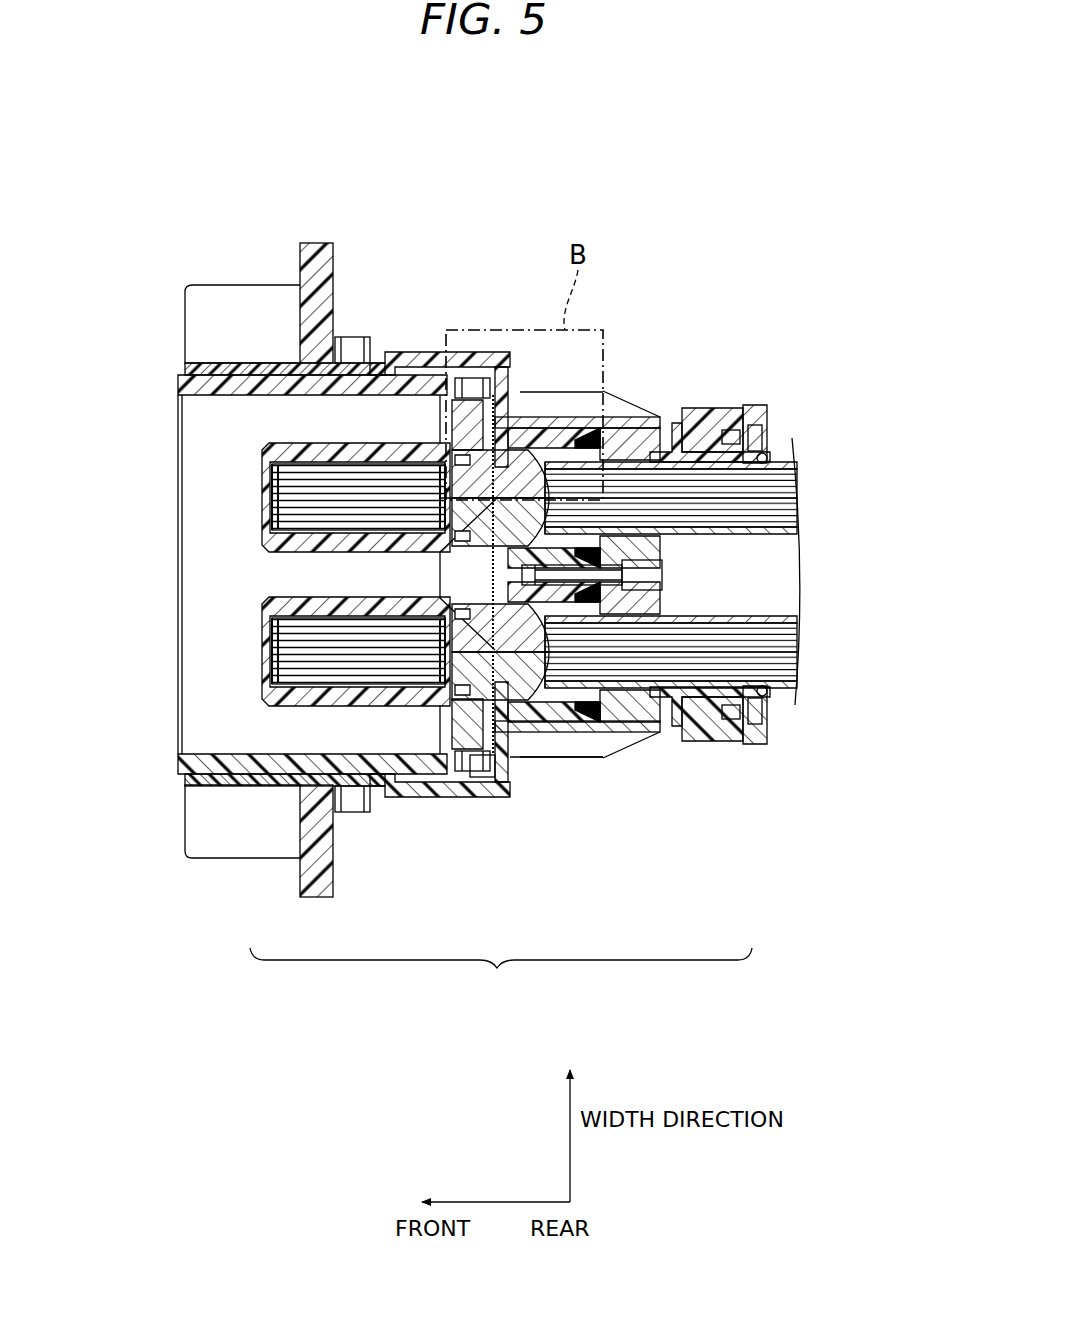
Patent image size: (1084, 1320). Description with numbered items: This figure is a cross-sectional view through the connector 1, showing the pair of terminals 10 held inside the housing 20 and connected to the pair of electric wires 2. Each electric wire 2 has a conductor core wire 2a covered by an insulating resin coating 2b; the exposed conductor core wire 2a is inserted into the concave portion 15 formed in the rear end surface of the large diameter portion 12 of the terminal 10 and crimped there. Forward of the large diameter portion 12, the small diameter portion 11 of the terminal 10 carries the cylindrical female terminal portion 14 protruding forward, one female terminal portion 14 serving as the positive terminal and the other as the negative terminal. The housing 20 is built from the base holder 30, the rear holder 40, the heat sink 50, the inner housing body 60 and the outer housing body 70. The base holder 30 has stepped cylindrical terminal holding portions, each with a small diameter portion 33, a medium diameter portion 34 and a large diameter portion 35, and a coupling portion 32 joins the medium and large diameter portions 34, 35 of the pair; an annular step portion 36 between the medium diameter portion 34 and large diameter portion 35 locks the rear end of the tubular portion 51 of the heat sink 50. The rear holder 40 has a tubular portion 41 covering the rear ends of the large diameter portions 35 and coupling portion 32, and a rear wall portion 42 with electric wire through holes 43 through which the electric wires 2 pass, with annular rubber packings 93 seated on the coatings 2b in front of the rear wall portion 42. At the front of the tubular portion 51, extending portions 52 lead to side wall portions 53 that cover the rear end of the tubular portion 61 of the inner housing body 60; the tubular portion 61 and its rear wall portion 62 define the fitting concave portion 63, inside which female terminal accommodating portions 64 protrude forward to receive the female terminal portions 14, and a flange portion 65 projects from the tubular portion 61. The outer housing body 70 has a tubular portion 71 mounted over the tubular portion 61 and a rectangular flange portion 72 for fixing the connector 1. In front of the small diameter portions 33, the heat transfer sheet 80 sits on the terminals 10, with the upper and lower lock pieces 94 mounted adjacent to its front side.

The connector 1 is at (762, 245).
The electric wire 2 is at (722, 571).
The conductor core wire 2a is at (765, 525).
The coating 2b is at (785, 458).
The terminal 10 is at (548, 705).
The small diameter portion 11 is at (458, 430).
The large diameter portion 12 is at (613, 470).
The female terminal portion 14 is at (345, 483).
The concave portion 15 is at (635, 460).
The housing 20 is at (501, 975).
The base holder 30 is at (680, 738).
The coupling portion 32 is at (660, 567).
The small diameter portion 33 is at (538, 445).
The medium diameter portion 34 is at (585, 450).
The large diameter portion 35 is at (685, 440).
The step portion 36 is at (658, 460).
The rear holder 40 is at (738, 748).
The tubular portion 41 is at (748, 420).
The rear wall portion 42 is at (760, 440).
The electric wire through hole 43 is at (775, 460).
The heat sink 50 is at (597, 740).
The tubular portion 51 is at (520, 370).
The extending portion 52 is at (505, 352).
The side wall portion 53 is at (468, 352).
The inner housing body 60 is at (380, 815).
The tubular portion 61 is at (272, 375).
The rear wall portion 62 is at (408, 352).
The fitting concave portion 63 is at (200, 500).
The female terminal accommodating portion 64 is at (278, 447).
The flange portion 65 is at (378, 345).
The outer housing body 70 is at (238, 865).
The tubular portion 71 is at (215, 363).
The flange portion 72 is at (318, 250).
The heat transfer sheet 80 is at (500, 740).
The rubber packing 93 is at (725, 450).
The lock piece 94 is at (485, 775).